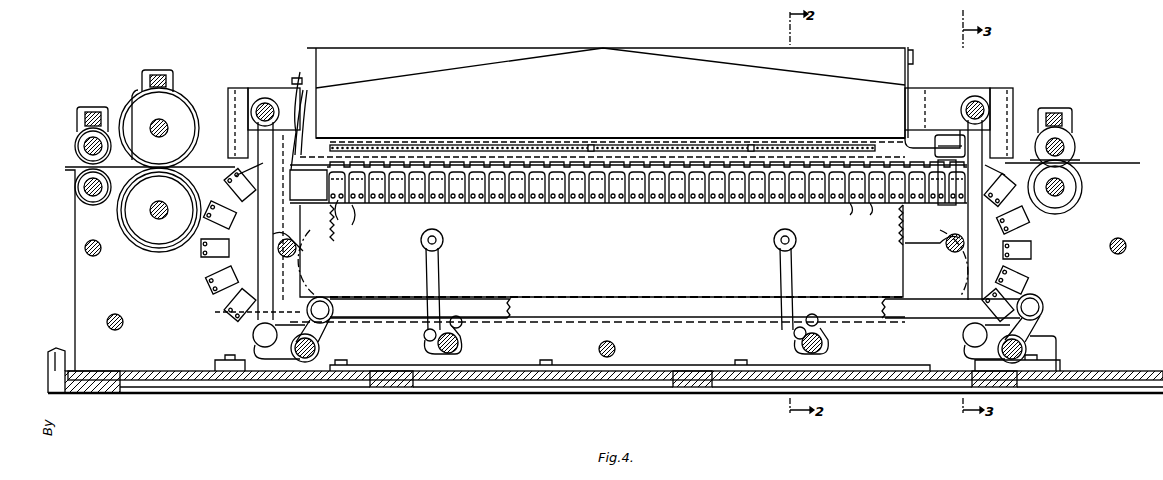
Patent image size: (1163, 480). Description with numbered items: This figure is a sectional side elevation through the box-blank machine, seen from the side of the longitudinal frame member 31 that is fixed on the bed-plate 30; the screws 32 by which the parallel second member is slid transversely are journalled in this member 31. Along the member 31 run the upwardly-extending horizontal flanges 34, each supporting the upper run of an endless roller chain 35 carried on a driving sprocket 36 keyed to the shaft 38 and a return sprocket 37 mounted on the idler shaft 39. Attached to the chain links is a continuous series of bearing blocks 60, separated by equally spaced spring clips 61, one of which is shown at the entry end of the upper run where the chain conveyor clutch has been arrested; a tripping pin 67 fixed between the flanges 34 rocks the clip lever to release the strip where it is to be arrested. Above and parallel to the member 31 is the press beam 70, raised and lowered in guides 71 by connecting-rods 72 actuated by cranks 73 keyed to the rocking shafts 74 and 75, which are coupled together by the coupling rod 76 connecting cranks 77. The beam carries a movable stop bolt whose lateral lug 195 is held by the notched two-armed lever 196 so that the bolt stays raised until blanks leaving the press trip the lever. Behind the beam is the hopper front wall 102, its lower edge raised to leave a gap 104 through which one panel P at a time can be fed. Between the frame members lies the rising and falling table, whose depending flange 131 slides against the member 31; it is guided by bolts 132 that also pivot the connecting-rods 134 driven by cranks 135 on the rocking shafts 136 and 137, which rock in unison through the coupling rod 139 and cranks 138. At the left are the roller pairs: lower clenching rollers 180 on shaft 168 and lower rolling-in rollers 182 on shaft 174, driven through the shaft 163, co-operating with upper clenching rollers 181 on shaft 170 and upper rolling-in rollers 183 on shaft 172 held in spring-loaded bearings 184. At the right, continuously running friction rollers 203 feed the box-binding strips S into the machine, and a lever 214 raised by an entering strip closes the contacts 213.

The bed-plate 30 is at (617, 385).
The longitudinal member 31 is at (78, 283).
The screws 32 is at (85, 248).
The horizontal flanges 34 is at (616, 225).
The endless roller chain 35 is at (857, 216).
The driving sprocket 36 is at (322, 246).
The return sprocket 37 is at (915, 235).
The shaft 38 is at (290, 256).
The idler shaft 39 is at (952, 250).
The bearing blocks 60 is at (240, 192).
The spring clips 61 is at (947, 205).
The tripping pin 67 is at (352, 221).
The press beam 70 is at (614, 81).
The guides 71 is at (246, 88).
The connecting-rods 72 is at (262, 164).
The cranks 73 is at (272, 352).
The rocking shaft 74 is at (320, 349).
The rocking shaft 75 is at (1026, 350).
The coupling rod 76 is at (366, 306).
The cranks 77 is at (328, 334).
The front wall 102 is at (408, 48).
The gap 104 is at (378, 146).
The depending flange 131 is at (646, 243).
The bolts 132 is at (444, 241).
The connecting-rods 134 is at (440, 282).
The cranks 135 is at (424, 340).
The rocking shaft 136 is at (458, 347).
The rocking shaft 137 is at (822, 343).
The cranks 138 is at (462, 326).
The coupling rod 139 is at (620, 316).
The shaft 163 is at (124, 318).
The shaft 168 is at (86, 188).
The shaft 170 is at (86, 147).
The shaft 172 is at (162, 124).
The shaft 174 is at (150, 208).
The lower clenching rollers 180 is at (80, 198).
The upper clenching rollers 181 is at (80, 136).
The lower rolling-in rollers 182 is at (146, 240).
The upper rolling-in rollers 183 is at (138, 88).
The spring-loaded bearings 184 is at (93, 107).
The lateral lug 195 is at (296, 78).
The two-armed lever 196 is at (306, 102).
The friction rollers 203 is at (1072, 142).
The contacts 213 is at (955, 108).
The levers 214 is at (945, 135).
The paper P is at (452, 147).
The strips S is at (690, 165).